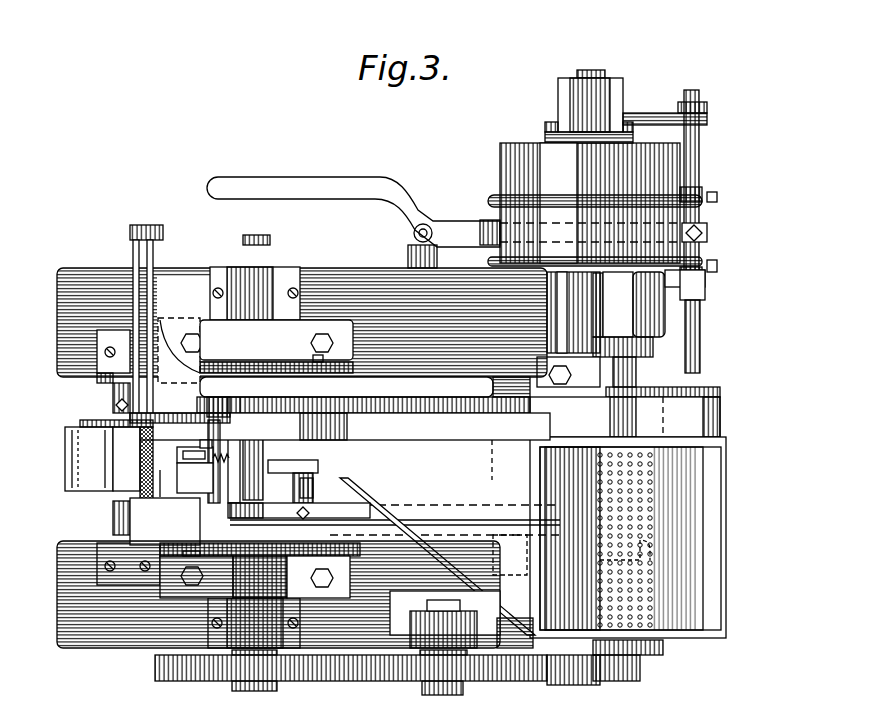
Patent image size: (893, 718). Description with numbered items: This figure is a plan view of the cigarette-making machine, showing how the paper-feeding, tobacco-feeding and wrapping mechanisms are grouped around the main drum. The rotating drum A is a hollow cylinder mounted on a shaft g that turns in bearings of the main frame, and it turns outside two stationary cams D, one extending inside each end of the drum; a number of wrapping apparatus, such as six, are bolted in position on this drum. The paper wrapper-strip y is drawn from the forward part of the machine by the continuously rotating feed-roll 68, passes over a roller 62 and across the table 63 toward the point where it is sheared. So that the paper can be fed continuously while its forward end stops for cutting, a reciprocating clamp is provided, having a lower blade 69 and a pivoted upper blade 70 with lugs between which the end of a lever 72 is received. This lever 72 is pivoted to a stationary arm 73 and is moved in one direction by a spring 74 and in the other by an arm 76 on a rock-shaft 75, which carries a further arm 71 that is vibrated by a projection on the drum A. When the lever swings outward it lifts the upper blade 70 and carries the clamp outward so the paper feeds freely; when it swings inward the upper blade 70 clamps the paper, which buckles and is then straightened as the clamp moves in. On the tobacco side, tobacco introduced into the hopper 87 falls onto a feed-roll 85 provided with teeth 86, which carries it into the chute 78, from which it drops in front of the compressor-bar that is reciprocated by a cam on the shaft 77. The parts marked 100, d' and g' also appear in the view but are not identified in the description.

The shaft 77 is at (591, 70).
The rock-shaft 75 is at (210, 243).
The spring 74 is at (143, 400).
The roller 62 is at (118, 441).
The feed-roll 68 is at (140, 467).
The table 63 is at (113, 518).
The lower blade 69 is at (170, 492).
The upper blade 70 is at (200, 490).
The arm 71 is at (207, 407).
The lever 72 is at (195, 455).
The stationary arm 73 is at (224, 492).
The arm 76 is at (203, 442).
The chute 78 is at (395, 507).
The feed-roll 85 is at (603, 446).
The teeth 86 is at (650, 601).
The hopper 87 is at (700, 556).
The block 100 is at (316, 577).
The stationary cam D is at (350, 378).
The rotating drum A is at (343, 425).
The paper wrapper-strip y is at (67, 460).
The plate d' is at (225, 452).
The shaft g is at (254, 457).
The gear hub g' is at (254, 684).